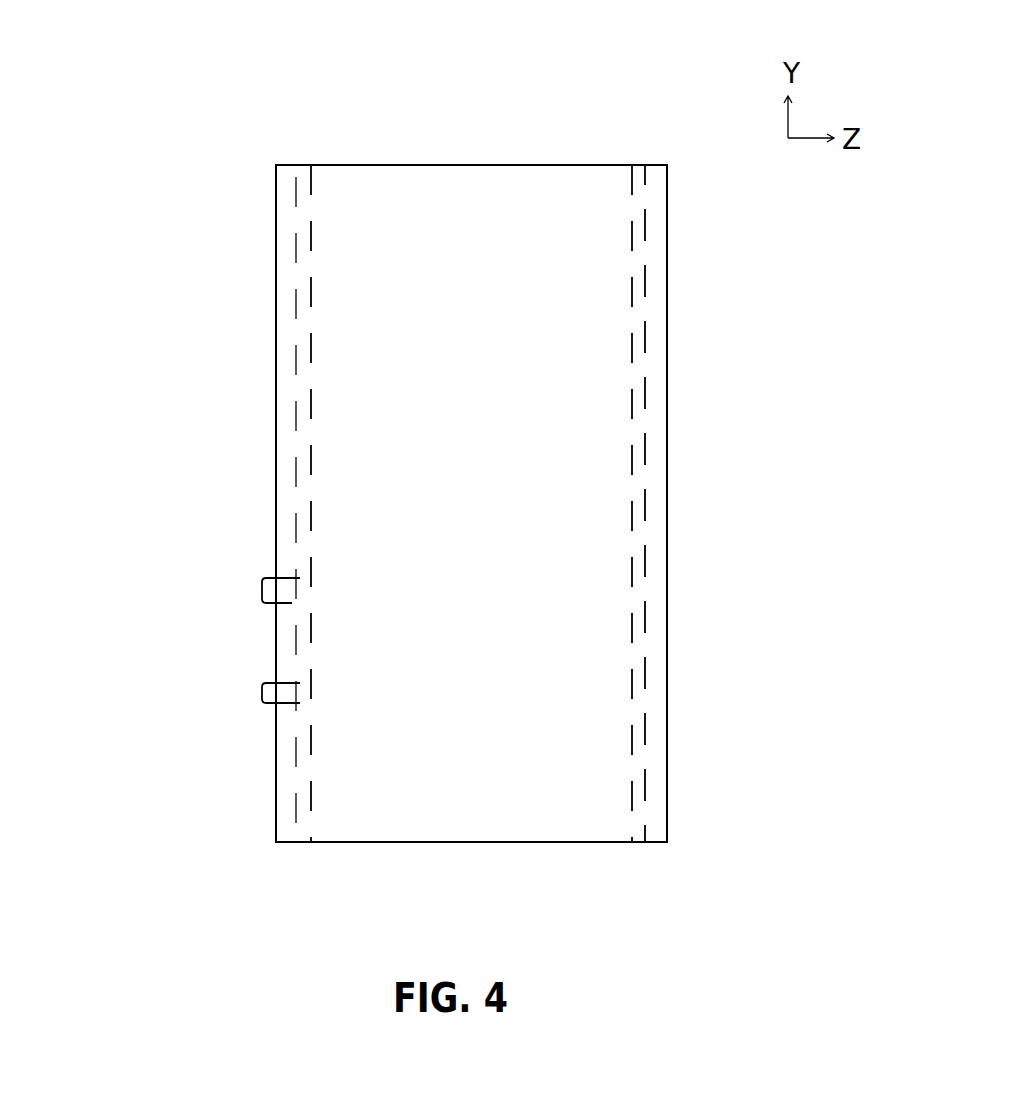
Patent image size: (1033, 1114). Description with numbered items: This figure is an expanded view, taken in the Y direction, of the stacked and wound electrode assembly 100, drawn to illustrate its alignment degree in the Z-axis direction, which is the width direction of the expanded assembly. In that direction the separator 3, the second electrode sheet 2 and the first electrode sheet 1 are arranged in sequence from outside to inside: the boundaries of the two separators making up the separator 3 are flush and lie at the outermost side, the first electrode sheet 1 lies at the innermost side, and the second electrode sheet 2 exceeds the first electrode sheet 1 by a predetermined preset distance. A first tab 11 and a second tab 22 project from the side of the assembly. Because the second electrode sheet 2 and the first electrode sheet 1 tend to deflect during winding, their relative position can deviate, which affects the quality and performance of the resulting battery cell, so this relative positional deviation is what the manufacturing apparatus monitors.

The electrode assembly 100 is at (162, 46).
The first electrode sheet 1 is at (305, 842).
The second electrode sheet 2 is at (298, 797).
The separator 3 is at (277, 754).
The first tab 11 is at (266, 603).
The second tab 22 is at (266, 705).